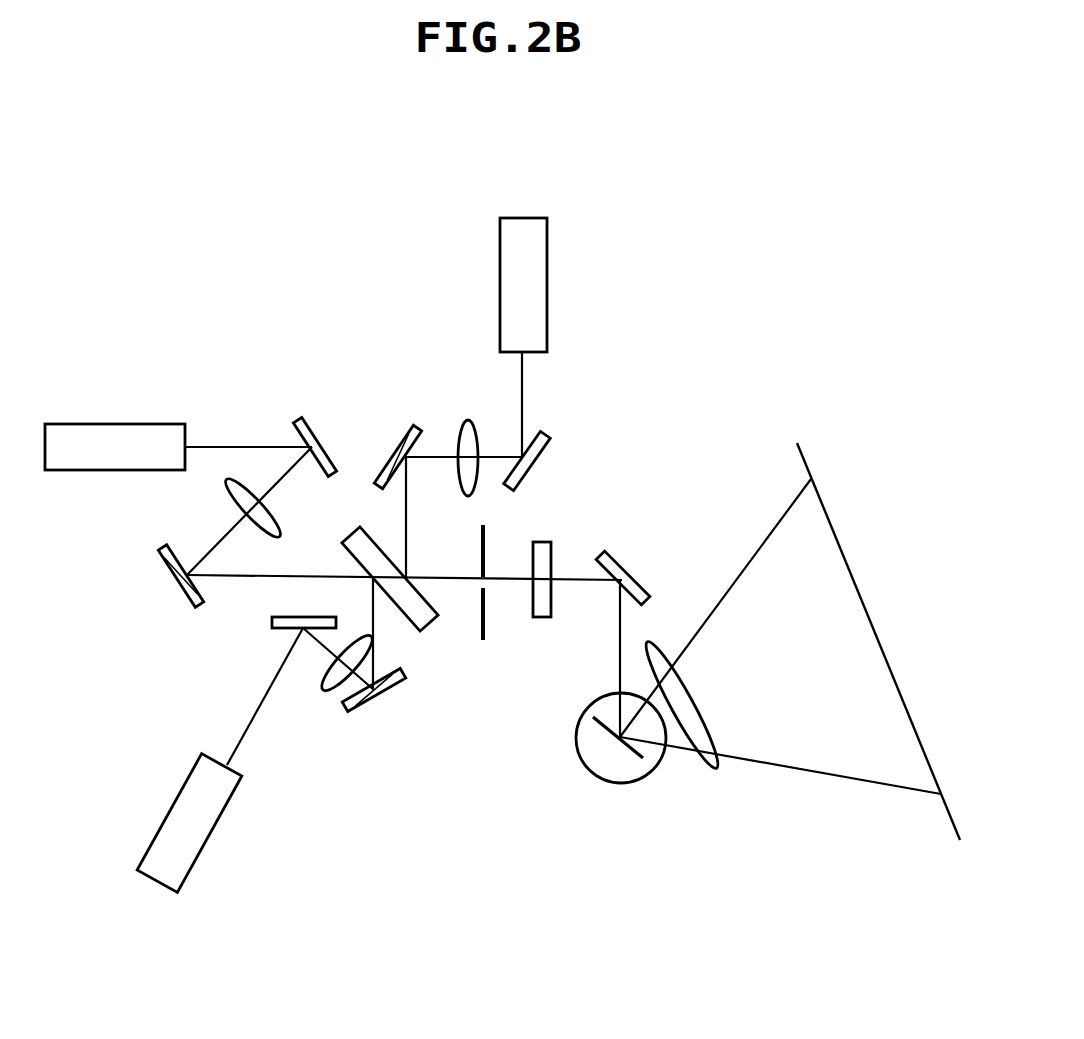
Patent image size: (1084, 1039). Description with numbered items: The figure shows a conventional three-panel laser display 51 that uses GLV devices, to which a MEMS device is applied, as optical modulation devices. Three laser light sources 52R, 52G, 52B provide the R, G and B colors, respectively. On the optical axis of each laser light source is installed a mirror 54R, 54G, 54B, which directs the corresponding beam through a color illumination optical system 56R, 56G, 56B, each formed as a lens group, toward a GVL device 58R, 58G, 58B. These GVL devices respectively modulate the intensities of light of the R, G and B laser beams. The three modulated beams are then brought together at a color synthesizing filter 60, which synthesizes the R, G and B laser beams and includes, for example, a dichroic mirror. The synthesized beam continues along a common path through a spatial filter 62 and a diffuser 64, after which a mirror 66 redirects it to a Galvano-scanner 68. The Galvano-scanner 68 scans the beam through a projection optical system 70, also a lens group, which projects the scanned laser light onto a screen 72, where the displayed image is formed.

The laser display 51 is at (113, 250).
The laser light source 52R is at (547, 255).
The laser light source 52G is at (115, 422).
The laser light source 52B is at (220, 825).
The mirror 54R is at (542, 440).
The mirror 54G is at (300, 418).
The mirror 54B is at (272, 627).
The color illumination optical system 56R is at (468, 422).
The color illumination optical system 56G is at (232, 500).
The color illumination optical system 56B is at (327, 690).
The GVL device 58R is at (410, 428).
The GVL device 58G is at (172, 576).
The GVL device 58B is at (382, 702).
The color synthesizing filter 60 is at (432, 632).
The spatial filter 62 is at (483, 640).
The diffuser 64 is at (543, 617).
The mirror 66 is at (625, 567).
The Galvano-scanner 68 is at (620, 784).
The projection optical system 70 is at (717, 768).
The screen 72 is at (842, 547).